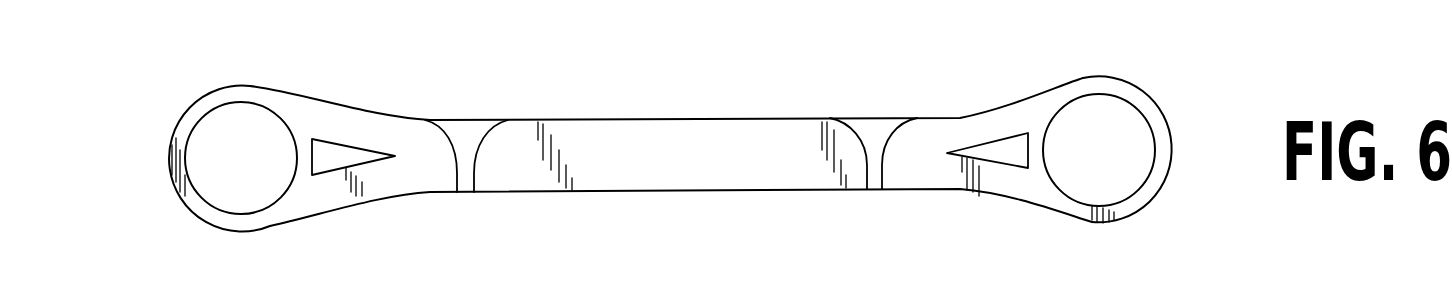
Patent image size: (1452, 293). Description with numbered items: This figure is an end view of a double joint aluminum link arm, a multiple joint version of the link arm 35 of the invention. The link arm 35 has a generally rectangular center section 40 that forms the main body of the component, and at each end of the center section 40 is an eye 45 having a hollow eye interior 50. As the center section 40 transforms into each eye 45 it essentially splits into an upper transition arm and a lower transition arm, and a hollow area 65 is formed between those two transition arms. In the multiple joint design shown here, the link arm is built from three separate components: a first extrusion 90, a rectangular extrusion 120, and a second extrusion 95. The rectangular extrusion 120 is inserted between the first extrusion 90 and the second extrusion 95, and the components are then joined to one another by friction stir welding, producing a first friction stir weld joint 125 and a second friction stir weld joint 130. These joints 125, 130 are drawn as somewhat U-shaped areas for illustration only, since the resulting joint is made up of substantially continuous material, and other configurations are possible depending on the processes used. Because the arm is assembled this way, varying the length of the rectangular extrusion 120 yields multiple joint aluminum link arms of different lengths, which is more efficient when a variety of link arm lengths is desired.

The link arm 35 is at (738, 97).
The center section 40 is at (618, 135).
The eye 45 is at (223, 95).
The hollow eye interior 50 is at (253, 187).
The hollow area 65 is at (330, 155).
The first extrusion 90 is at (405, 140).
The second extrusion 95 is at (932, 140).
The rectangular extrusion 120 is at (725, 157).
The first friction stir weld joint 125 is at (472, 135).
The second friction stir weld joint 130 is at (882, 125).